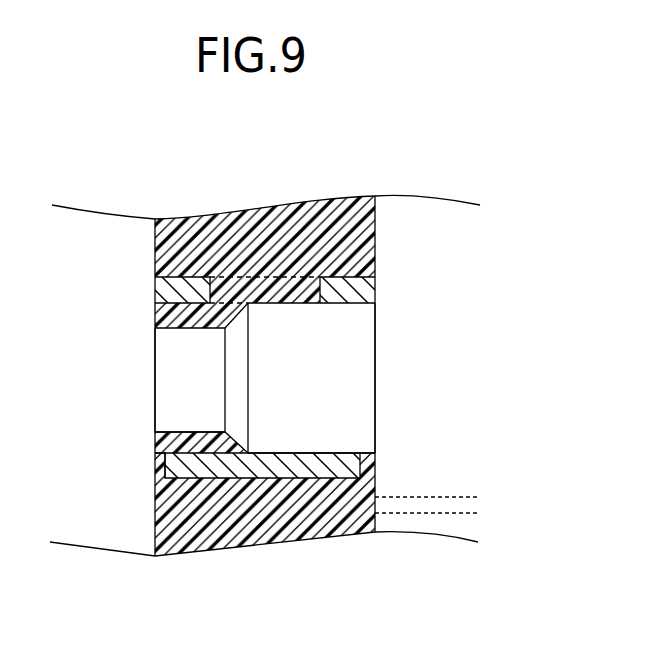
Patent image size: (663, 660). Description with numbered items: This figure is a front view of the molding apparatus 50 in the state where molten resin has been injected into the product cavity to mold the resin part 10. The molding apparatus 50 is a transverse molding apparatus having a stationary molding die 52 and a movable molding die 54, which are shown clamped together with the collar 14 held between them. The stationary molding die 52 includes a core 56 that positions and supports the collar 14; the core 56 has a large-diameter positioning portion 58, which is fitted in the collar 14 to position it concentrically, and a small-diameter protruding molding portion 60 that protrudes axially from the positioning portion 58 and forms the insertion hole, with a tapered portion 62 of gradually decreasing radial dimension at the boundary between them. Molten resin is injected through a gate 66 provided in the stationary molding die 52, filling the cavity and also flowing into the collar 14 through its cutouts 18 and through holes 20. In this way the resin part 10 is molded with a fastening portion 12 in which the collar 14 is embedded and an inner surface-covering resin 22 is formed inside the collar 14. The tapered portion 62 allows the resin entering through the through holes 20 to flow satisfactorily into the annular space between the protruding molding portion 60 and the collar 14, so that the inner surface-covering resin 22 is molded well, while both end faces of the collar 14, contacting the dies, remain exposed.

The resin part 10 is at (337, 237).
The fastening portion 12 is at (108, 492).
The collar 14 is at (310, 462).
The cutouts 18 is at (155, 459).
The through holes 20 is at (312, 286).
The inner surface-covering resin 22 is at (188, 480).
The molding apparatus 50 is at (208, 147).
The stationary molding die 52 is at (415, 218).
The movable molding die 54 is at (81, 237).
The core 56 is at (230, 292).
The positioning portion 58 is at (318, 393).
The protruding molding portion 60 is at (200, 395).
The tapered portion 62 is at (238, 423).
The gate 66 is at (413, 508).